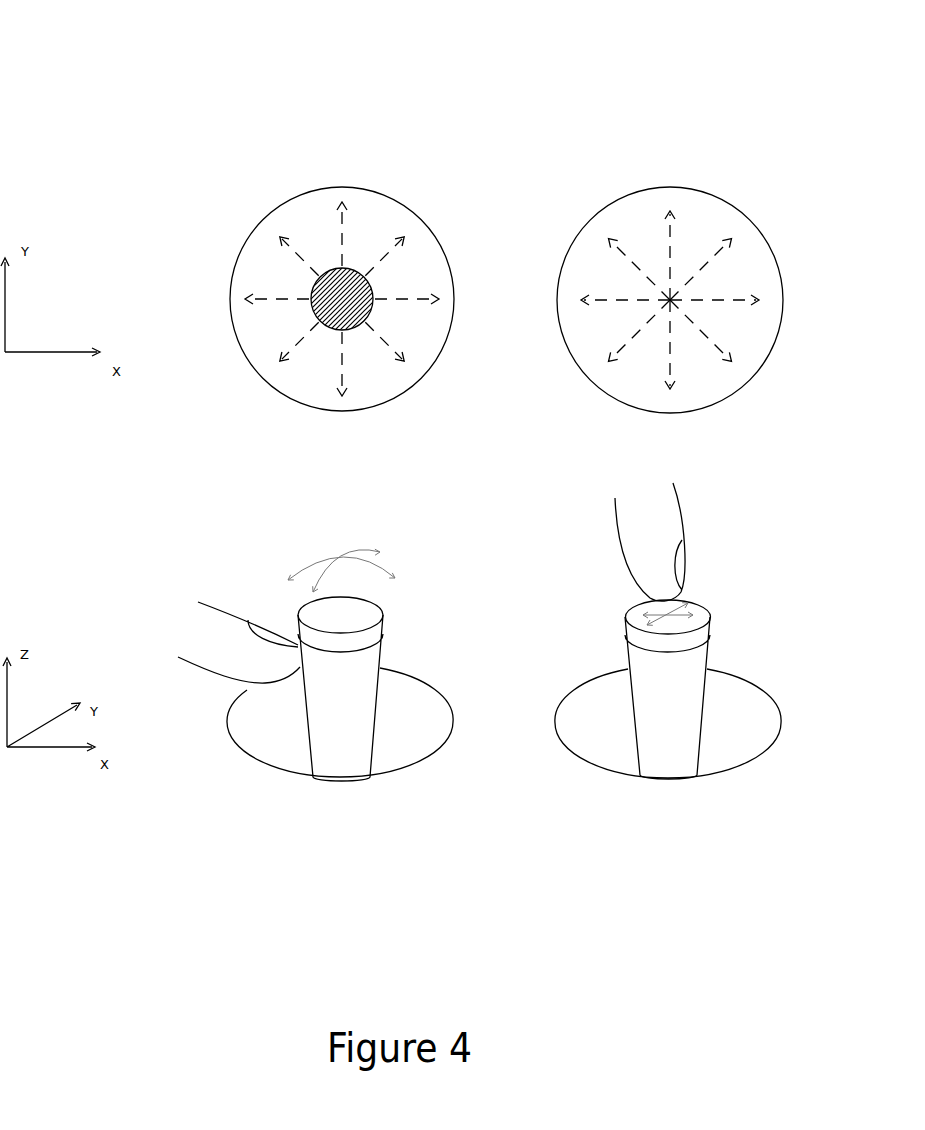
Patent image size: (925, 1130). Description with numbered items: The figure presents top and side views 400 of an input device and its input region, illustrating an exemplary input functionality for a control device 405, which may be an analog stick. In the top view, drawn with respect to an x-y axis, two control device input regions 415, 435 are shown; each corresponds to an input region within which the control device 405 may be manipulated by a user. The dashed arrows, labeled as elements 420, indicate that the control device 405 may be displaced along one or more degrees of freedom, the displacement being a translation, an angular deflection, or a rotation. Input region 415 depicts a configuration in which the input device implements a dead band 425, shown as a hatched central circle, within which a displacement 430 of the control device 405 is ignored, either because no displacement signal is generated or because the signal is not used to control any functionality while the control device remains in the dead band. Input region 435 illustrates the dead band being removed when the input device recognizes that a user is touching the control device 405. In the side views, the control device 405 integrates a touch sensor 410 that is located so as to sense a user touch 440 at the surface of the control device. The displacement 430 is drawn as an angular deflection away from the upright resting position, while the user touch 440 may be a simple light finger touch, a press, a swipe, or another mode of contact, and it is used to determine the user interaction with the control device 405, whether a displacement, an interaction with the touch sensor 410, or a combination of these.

The top and side views 400 is at (27, 29).
The control device 405 is at (350, 755).
The touch sensor 410 is at (378, 630).
The control device input region 415 is at (338, 279).
The elements 420 is at (407, 297).
The dead band 425 is at (313, 289).
The displacement 430 is at (341, 656).
The control device input region 435 is at (748, 182).
The user touch 440 is at (702, 588).